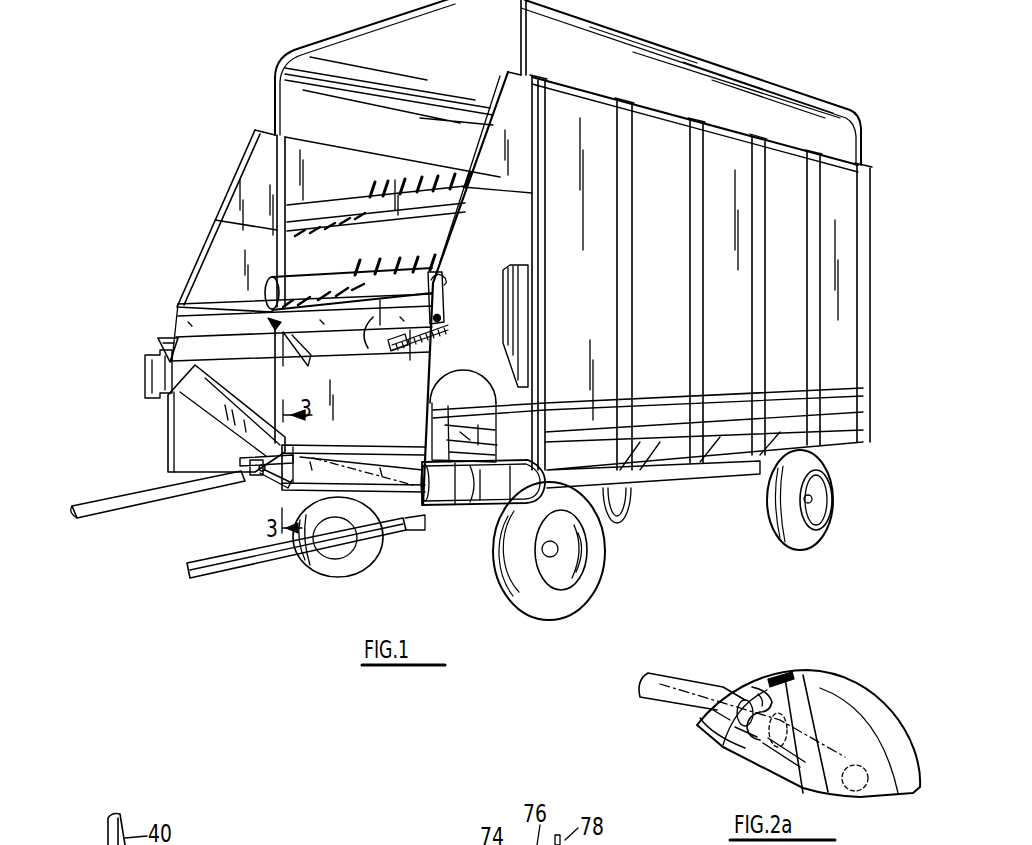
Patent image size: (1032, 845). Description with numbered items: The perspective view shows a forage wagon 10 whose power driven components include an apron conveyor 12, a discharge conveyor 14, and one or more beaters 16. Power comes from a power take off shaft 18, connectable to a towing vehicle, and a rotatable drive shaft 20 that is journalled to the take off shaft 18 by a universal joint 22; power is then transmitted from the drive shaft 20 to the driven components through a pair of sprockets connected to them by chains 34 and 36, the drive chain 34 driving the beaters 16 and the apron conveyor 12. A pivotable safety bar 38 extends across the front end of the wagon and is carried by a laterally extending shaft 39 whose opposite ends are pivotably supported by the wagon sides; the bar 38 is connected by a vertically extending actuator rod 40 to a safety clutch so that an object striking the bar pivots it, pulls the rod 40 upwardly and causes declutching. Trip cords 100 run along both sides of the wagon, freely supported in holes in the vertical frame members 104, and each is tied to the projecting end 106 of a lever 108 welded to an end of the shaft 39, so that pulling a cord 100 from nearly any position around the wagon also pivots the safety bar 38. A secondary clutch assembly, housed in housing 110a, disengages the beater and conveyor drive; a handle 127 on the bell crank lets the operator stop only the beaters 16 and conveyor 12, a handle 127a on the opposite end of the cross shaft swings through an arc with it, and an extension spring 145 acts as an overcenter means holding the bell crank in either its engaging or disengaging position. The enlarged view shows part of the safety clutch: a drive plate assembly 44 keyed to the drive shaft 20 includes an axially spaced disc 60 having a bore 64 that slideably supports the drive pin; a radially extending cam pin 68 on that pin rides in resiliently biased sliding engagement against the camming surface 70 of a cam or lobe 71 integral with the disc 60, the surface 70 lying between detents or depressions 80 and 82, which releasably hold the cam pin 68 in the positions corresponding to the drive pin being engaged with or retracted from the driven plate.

In FIG. 1, the forage wagon 10 is at (752, 70).
In FIG. 1, the beaters 16 is at (367, 227).
In FIG. 1, the projecting end 106 is at (437, 278).
In FIG. 1, the levers 108 is at (450, 275).
In FIG. 1, the laterally extending shaft 39 is at (447, 318).
In FIG. 1, the extension spring 145 is at (433, 336).
In FIG. 1, the handle 127 is at (162, 347).
In FIG. 1, the handle 127a is at (400, 348).
In FIG. 1, the housing 110a is at (145, 375).
In FIG. 1, the pivotable safety bar 38 is at (372, 345).
In FIG. 1, the vertically extending actuator rod 40 is at (272, 384).
In FIG. 1, the drive chain 34 is at (222, 432).
In FIG. 1, the apron conveyor 12 is at (476, 410).
In FIG. 1, the vertical frame members 104 is at (548, 332).
In FIG. 1, the trip cords 100 is at (571, 404).
In FIG. 1, the chain 36 is at (355, 488).
In FIG. 1, the discharge conveyor 14 is at (492, 508).
In FIG. 1, the power take off shaft 18 is at (112, 497).
In FIG. 1, the universal joint 22 is at (240, 480).
In FIG. 1, the rotatable drive shaft 20 is at (261, 478).
In FIG. 2a, the cam pin 68 is at (663, 672).
In FIG. 2a, the camming surface 70 is at (762, 688).
In FIG. 2a, the cam 71 is at (785, 675).
In FIG. 2a, the drive plate assembly 44 is at (825, 665).
In FIG. 2a, the disc 60 is at (840, 686).
In FIG. 2a, the detent 80 is at (740, 706).
In FIG. 2a, the bore 64 is at (738, 728).
In FIG. 2a, the detent 82 is at (790, 750).